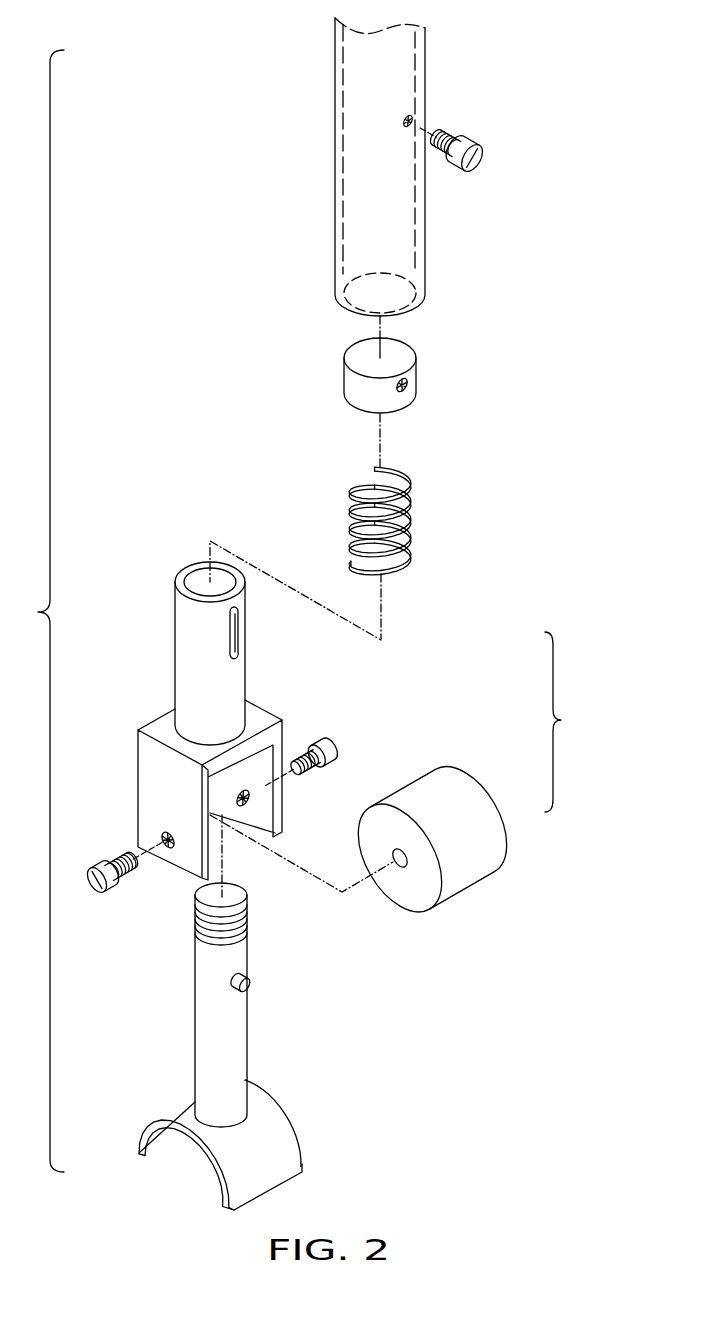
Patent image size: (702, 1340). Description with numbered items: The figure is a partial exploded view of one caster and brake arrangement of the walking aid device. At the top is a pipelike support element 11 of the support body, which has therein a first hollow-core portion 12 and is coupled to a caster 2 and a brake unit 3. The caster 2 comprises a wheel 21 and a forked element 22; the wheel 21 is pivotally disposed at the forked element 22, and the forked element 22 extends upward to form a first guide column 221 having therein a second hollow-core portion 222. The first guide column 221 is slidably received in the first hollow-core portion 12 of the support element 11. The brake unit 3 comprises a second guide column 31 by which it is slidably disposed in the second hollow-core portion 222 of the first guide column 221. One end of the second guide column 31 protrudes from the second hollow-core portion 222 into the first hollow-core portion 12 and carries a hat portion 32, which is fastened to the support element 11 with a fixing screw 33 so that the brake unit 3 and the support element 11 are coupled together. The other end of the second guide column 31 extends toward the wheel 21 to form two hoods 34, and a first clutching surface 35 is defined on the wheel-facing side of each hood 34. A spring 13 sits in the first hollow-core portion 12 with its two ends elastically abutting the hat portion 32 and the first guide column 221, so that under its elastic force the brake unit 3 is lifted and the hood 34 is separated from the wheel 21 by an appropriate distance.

The support element 11 is at (425, 97).
The first hollow-core portion 12 is at (390, 218).
The spring 13 is at (385, 568).
The caster 2 is at (561, 722).
The wheel 21 is at (465, 803).
The forked element 22 is at (283, 803).
The first guide column 221 is at (240, 683).
The second hollow-core portion 222 is at (240, 587).
The brake unit 3 is at (312, 1063).
The second guide column 31 is at (240, 1024).
The hat portion 32 is at (413, 372).
The fixing screw 33 is at (482, 153).
The hood 34 is at (280, 1143).
The first clutching surface 35 is at (157, 1142).